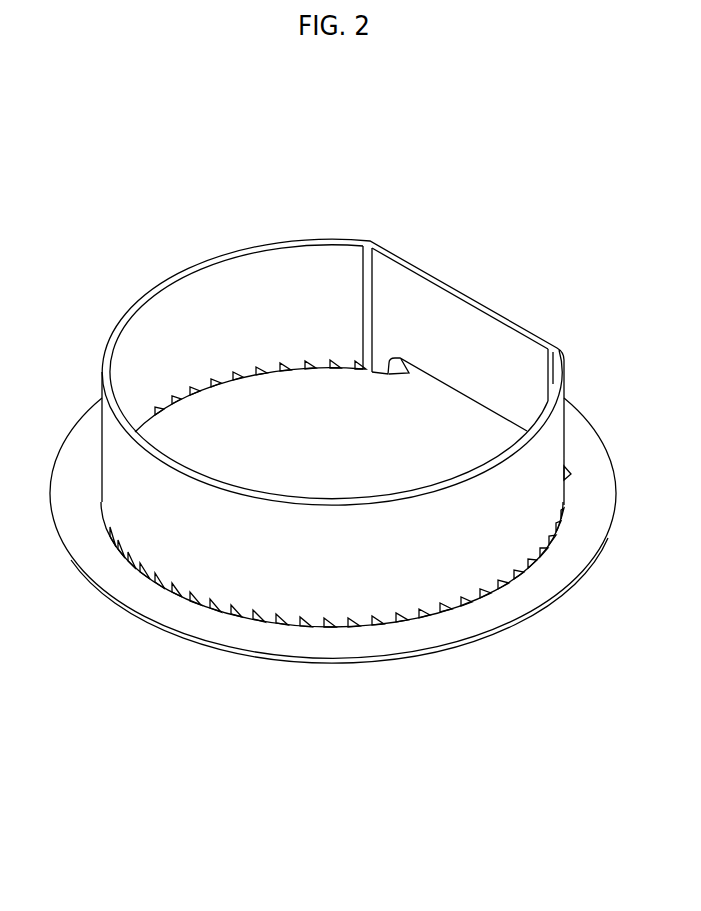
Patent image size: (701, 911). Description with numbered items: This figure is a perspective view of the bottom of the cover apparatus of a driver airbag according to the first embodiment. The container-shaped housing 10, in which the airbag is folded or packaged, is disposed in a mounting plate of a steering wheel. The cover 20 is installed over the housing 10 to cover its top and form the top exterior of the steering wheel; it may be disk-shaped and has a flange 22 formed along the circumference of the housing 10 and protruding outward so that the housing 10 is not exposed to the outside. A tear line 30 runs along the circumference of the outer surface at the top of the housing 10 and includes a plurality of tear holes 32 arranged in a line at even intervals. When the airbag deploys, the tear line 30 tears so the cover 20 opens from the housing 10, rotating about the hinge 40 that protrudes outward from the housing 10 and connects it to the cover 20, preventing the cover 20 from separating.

The housing 10 is at (220, 290).
The cover 20 is at (286, 667).
The flange 22 is at (357, 642).
The tear line 30 is at (456, 615).
The tear holes 32 is at (487, 597).
The hinge 40 is at (468, 412).